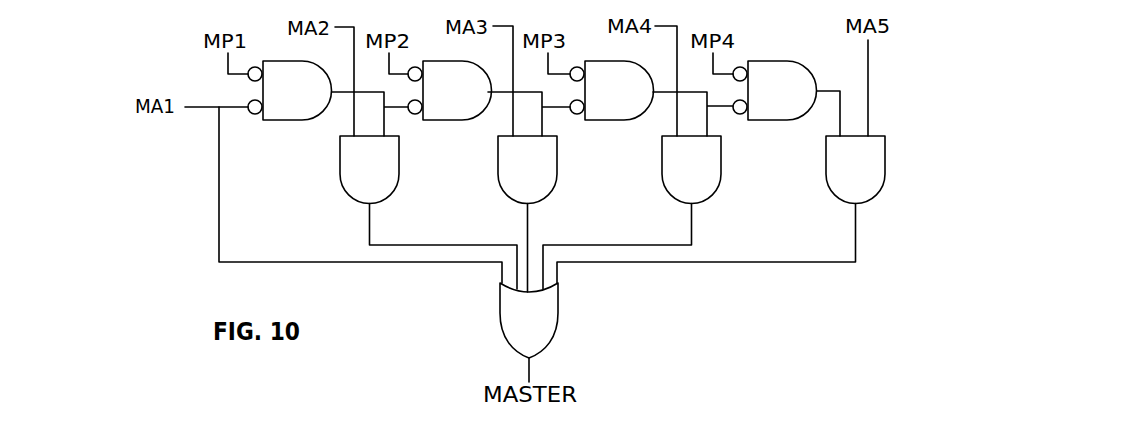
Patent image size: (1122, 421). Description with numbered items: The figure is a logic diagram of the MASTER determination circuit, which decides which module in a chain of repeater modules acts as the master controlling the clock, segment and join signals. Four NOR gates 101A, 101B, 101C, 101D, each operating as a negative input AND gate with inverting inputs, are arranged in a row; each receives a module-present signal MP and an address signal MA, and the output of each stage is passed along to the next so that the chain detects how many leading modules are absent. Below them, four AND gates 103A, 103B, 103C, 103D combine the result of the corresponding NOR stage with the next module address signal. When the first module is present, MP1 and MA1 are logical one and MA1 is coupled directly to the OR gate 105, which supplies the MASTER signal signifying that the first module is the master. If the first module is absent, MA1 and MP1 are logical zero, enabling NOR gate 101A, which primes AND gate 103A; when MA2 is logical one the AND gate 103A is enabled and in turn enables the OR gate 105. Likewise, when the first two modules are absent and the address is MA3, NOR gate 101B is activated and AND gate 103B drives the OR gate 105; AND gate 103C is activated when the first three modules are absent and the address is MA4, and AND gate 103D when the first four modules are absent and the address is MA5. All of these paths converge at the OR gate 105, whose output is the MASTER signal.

The NOR gate 101A is at (298, 121).
The NOR gate 101B is at (458, 121).
The NOR gate 101C is at (620, 121).
The NOR gate 101D is at (783, 121).
The AND gate 103A is at (348, 189).
The AND gate 103B is at (506, 189).
The AND gate 103C is at (670, 189).
The AND gate 103D is at (834, 189).
The OR gate 105 is at (554, 330).